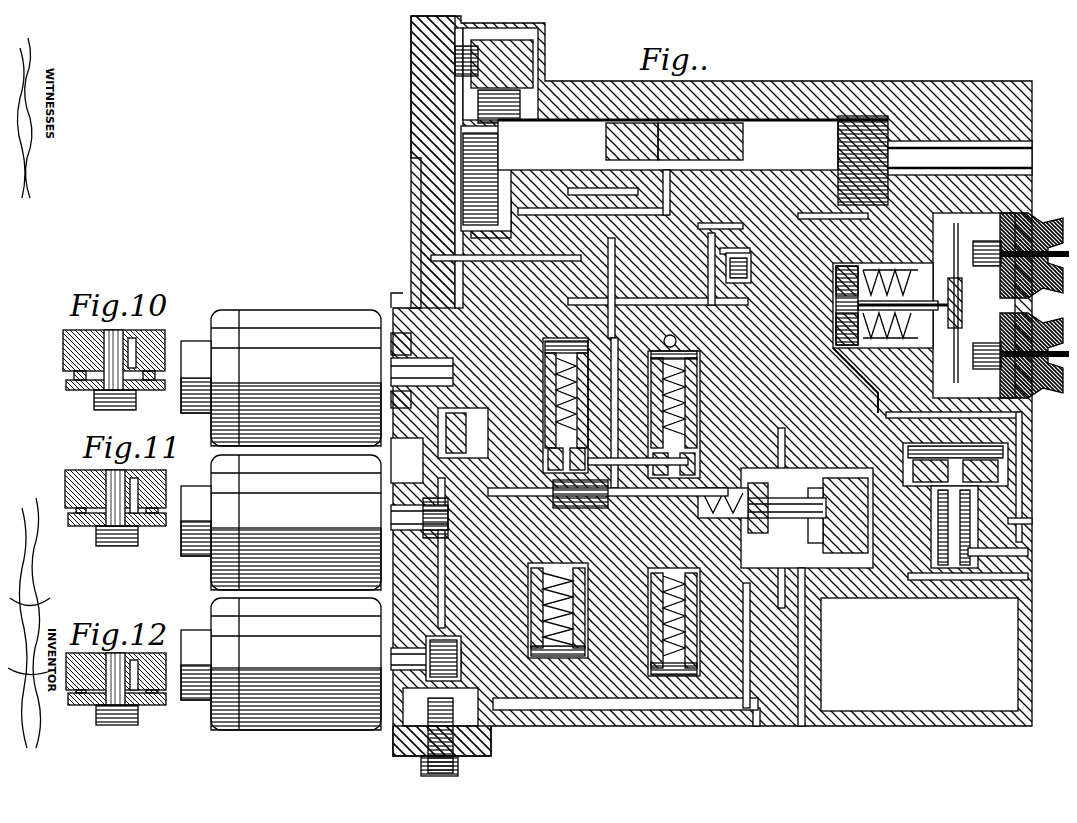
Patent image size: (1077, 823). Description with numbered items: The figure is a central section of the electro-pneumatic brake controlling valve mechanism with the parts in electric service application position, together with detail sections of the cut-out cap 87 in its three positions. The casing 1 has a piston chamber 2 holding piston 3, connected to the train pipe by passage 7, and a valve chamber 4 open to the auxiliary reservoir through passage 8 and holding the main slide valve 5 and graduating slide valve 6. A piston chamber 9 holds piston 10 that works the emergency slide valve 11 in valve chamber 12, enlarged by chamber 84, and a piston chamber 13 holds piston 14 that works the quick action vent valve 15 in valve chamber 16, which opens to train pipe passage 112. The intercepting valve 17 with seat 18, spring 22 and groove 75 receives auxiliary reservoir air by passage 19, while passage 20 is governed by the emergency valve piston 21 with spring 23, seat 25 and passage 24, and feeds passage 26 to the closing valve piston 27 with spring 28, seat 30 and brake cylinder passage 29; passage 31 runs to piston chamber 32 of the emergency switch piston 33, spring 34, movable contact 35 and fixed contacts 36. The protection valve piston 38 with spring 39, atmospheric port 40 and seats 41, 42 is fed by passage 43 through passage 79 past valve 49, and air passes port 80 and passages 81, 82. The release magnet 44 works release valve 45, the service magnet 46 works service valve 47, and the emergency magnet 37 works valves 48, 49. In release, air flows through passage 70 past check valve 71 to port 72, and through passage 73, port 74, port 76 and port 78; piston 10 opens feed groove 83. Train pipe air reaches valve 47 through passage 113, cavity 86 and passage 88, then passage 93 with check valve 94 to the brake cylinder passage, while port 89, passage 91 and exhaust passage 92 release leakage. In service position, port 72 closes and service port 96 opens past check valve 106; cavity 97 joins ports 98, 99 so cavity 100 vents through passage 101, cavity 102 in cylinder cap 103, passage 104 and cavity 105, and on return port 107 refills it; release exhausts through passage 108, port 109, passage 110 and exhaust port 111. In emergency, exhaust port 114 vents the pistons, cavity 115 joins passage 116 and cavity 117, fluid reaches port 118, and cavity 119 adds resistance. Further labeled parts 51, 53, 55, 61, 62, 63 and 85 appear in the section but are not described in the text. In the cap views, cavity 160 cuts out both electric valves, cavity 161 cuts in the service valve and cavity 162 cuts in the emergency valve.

In FIG. 7, the casing 1 is at (975, 73).
In FIG. 7, the piston chamber 2 is at (475, 99).
In FIG. 7, the piston 3 is at (480, 179).
In FIG. 7, the valve chamber 4 is at (880, 186).
In FIG. 7, the main slide valve 5 is at (798, 160).
In FIG. 7, the graduating slide valve 6 is at (757, 134).
In FIG. 7, the passage 7 is at (413, 184).
In FIG. 7, the passage 8 is at (955, 140).
In FIG. 7, the piston chamber 9 is at (970, 452).
In FIG. 7, the piston 10 is at (990, 454).
In FIG. 7, the emergency slide valve 11 is at (948, 508).
In FIG. 7, the valve chamber 12 is at (983, 540).
In FIG. 7, the piston chamber 13 is at (815, 475).
In FIG. 7, the piston 14 is at (807, 518).
In FIG. 7, the quick action train pipe vent valve 15 is at (760, 475).
In FIG. 7, the valve chamber 16 is at (728, 443).
In FIG. 7, the intercepting valve piston device 17 is at (640, 599).
In FIG. 7, the seat 18 is at (672, 508).
In FIG. 7, the passage 19 is at (655, 515).
In FIG. 7, the passage 20 is at (645, 611).
In FIG. 7, the emergency valve piston 21 is at (570, 606).
In FIG. 7, the coil spring 22 is at (640, 649).
In FIG. 7, the coil spring 23 is at (575, 628).
In FIG. 7, the passage 24 is at (440, 369).
In FIG. 7, the seat 25 is at (751, 258).
In FIG. 7, the passage 26 is at (530, 452).
In FIG. 7, the closing valve piston 27 is at (565, 380).
In FIG. 7, the spring 28 is at (565, 342).
In FIG. 7, the brake cylinder passage 29 is at (603, 497).
In FIG. 7, the seat 30 is at (565, 430).
In FIG. 7, the passage 31 is at (865, 370).
In FIG. 7, the piston chamber 32 is at (850, 380).
In FIG. 7, the emergency switch piston 33 is at (855, 293).
In FIG. 7, the spring 34 is at (890, 295).
In FIG. 7, the movable contact 35 is at (945, 262).
In FIG. 7, the fixed contacts 36 is at (978, 260).
In FIG. 7, the emergency magnet 37 is at (210, 612).
In FIG. 7, the valve piston 38 is at (692, 362).
In FIG. 7, the spring 39 is at (631, 407).
In FIG. 7, the atmospheric port 40 is at (850, 440).
In FIG. 7, the seat 41 is at (692, 355).
In FIG. 7, the seat 42 is at (692, 412).
In FIG. 7, the passage 43 is at (440, 596).
In FIG. 7, the release magnet 44 is at (322, 312).
In FIG. 7, the release valve 45 is at (439, 361).
In FIG. 7, the service magnet 46 is at (205, 470).
In FIG. 7, the service application valve 47 is at (419, 524).
In FIG. 7, the valve 48 is at (426, 547).
In FIG. 7, the valve 49 is at (461, 654).
In FIG. 7, the bracket 51 is at (391, 292).
In FIG. 7, the chamber 53 is at (406, 460).
In FIG. 7, the passage 55 is at (434, 587).
In FIG. 7, the valve 61 is at (448, 428).
In FIG. 7, the passage 62 is at (439, 570).
In FIG. 7, the pump 63 is at (385, 739).
In FIG. 7, the passage 70 is at (515, 55).
In FIG. 7, the check valve 71 is at (447, 51).
In FIG. 7, the port 72 is at (562, 160).
In FIG. 7, the passage 73 is at (761, 487).
In FIG. 7, the port 74 is at (745, 608).
In FIG. 7, the annular groove 75 is at (745, 630).
In FIG. 7, the port 76 is at (745, 588).
In FIG. 7, the port 78 is at (578, 572).
In FIG. 7, the passage 79 is at (641, 729).
In FIG. 7, the port 80 is at (679, 464).
In FIG. 7, the passage 81 is at (718, 377).
In FIG. 10, the passage 81 is at (150, 338).
In FIG. 11, the passage 81 is at (140, 480).
In FIG. 12, the passage 81 is at (155, 650).
In FIG. 7, the passage 82 is at (780, 425).
In FIG. 7, the feed groove 83 is at (906, 491).
In FIG. 7, the chamber 84 is at (933, 703).
In FIG. 7, the passage 85 is at (608, 497).
In FIG. 7, the cavity 86 is at (483, 742).
In FIG. 7, the cap 87 is at (450, 752).
In FIG. 10, the cap 87 is at (62, 380).
In FIG. 11, the cap 87 is at (64, 516).
In FIG. 12, the cap 87 is at (70, 698).
In FIG. 7, the passage 88 is at (444, 554).
In FIG. 10, the passage 88 is at (128, 330).
In FIG. 11, the passage 88 is at (132, 472).
In FIG. 12, the passage 88 is at (128, 652).
In FIG. 7, the port 89 is at (925, 512).
In FIG. 7, the passage 91 is at (820, 475).
In FIG. 7, the quick action exhaust passage 92 is at (800, 649).
In FIG. 7, the passage 93 is at (434, 508).
In FIG. 7, the check valve 94 is at (456, 416).
In FIG. 7, the service port 96 is at (780, 168).
In FIG. 7, the cavity 97 is at (682, 160).
In FIG. 7, the port 98 is at (614, 189).
In FIG. 7, the port 99 is at (676, 188).
In FIG. 7, the cavity 100 is at (600, 190).
In FIG. 7, the passage 101 is at (658, 292).
In FIG. 7, the cavity 102 is at (418, 250).
In FIG. 7, the cylinder cap 103 is at (412, 143).
In FIG. 7, the passage 104 is at (505, 243).
In FIG. 7, the cavity 105 is at (729, 220).
In FIG. 7, the check valve 106 is at (750, 271).
In FIG. 7, the port 107 is at (632, 141).
In FIG. 7, the passage 108 is at (741, 244).
In FIG. 7, the port 109 is at (735, 183).
In FIG. 7, the passage 110 is at (678, 256).
In FIG. 7, the exhaust port 111 is at (400, 366).
In FIG. 7, the train pipe passage 112 is at (748, 718).
In FIG. 7, the passage 113 is at (390, 660).
In FIG. 10, the passage 113 is at (62, 337).
In FIG. 11, the passage 113 is at (70, 472).
In FIG. 12, the passage 113 is at (80, 655).
In FIG. 7, the atmospheric exhaust port 114 is at (530, 215).
In FIG. 7, the cavity 115 is at (962, 575).
In FIG. 7, the passage 116 is at (1014, 409).
In FIG. 7, the cavity 117 is at (806, 168).
In FIG. 7, the port 118 is at (492, 428).
In FIG. 7, the resistance increasing cavity 119 is at (925, 575).
In FIG. 10, the cavity 160 is at (128, 378).
In FIG. 11, the cavity 161 is at (135, 522).
In FIG. 12, the cavity 162 is at (140, 700).